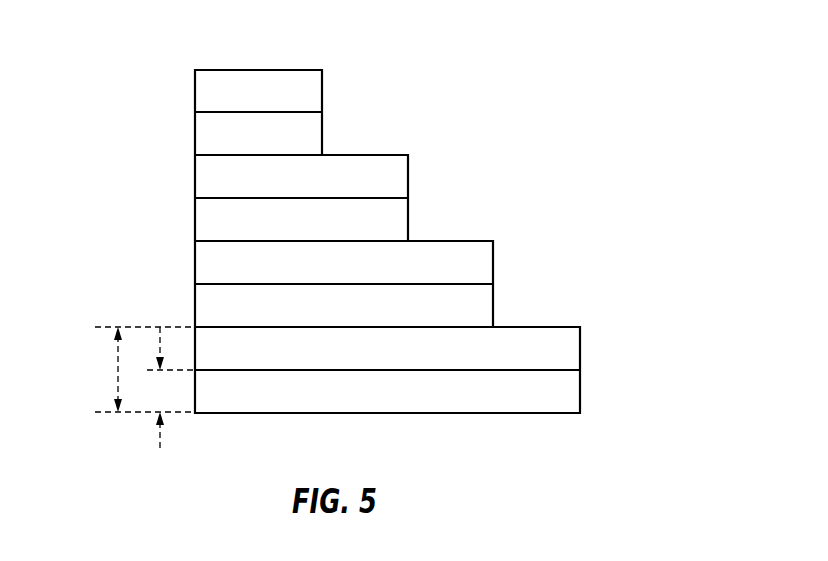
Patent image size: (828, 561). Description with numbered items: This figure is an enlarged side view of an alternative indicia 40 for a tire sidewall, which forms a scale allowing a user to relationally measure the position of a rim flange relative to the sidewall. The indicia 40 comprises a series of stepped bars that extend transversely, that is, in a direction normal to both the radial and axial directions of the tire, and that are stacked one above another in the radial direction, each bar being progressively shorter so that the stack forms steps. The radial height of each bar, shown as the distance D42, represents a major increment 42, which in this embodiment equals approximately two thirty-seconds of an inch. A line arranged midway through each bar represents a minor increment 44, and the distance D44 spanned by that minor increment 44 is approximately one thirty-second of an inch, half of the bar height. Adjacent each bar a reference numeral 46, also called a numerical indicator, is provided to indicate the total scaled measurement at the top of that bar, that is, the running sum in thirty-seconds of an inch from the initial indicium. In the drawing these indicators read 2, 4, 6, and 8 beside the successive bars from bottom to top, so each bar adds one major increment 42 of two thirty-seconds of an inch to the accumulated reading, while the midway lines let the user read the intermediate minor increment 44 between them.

The indicia 40 is at (656, 55).
The major increment 42 is at (258, 70).
The minor increment 44 is at (208, 112).
The reference numeral 46 is at (347, 90).
The eighth layer pair 8 is at (269, 112).
The sixth layer pair 6 is at (311, 198).
The fourth layer pair 4 is at (355, 284).
The second layer pair 2 is at (398, 370).
The major increment distance D42 is at (118, 370).
The minor increment distance D44 is at (160, 438).